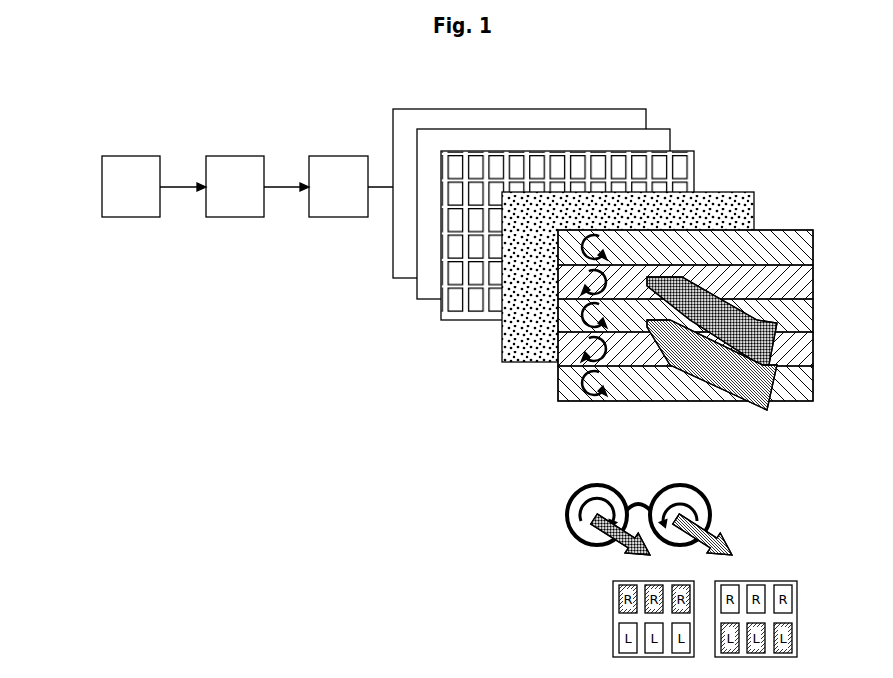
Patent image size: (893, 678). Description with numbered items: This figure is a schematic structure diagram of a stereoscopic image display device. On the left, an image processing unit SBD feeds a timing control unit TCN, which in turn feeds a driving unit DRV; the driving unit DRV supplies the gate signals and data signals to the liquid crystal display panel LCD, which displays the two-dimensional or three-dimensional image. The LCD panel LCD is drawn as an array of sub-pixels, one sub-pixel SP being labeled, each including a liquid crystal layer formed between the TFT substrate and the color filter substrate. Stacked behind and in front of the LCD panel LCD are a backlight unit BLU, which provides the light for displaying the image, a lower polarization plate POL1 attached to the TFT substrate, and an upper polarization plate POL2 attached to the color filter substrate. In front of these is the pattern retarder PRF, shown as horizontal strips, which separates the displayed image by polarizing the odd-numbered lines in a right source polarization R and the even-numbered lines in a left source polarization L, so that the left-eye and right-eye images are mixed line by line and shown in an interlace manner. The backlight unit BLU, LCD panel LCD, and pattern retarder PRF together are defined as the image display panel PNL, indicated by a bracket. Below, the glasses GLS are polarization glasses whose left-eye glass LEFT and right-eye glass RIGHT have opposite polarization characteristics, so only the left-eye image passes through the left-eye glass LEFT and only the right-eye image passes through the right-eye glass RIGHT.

The image processing unit SBD is at (145, 196).
The timing control unit TCN is at (249, 196).
The driving unit DRV is at (353, 196).
The sub-pixel SP is at (455, 151).
The backlight unit BLU is at (641, 110).
The lower polarization plate POL1 is at (658, 129).
The liquid crystal display panel LCD is at (584, 197).
The image display panel PNL is at (608, 236).
The upper polarization plate POL2 is at (728, 192).
The pattern retarder PRF is at (691, 299).
The right source polarization R is at (610, 244).
The left source polarization L is at (610, 279).
The left-eye glass LEFT is at (608, 507).
The right-eye glass RIGHT is at (727, 478).
The glasses GLS is at (660, 507).